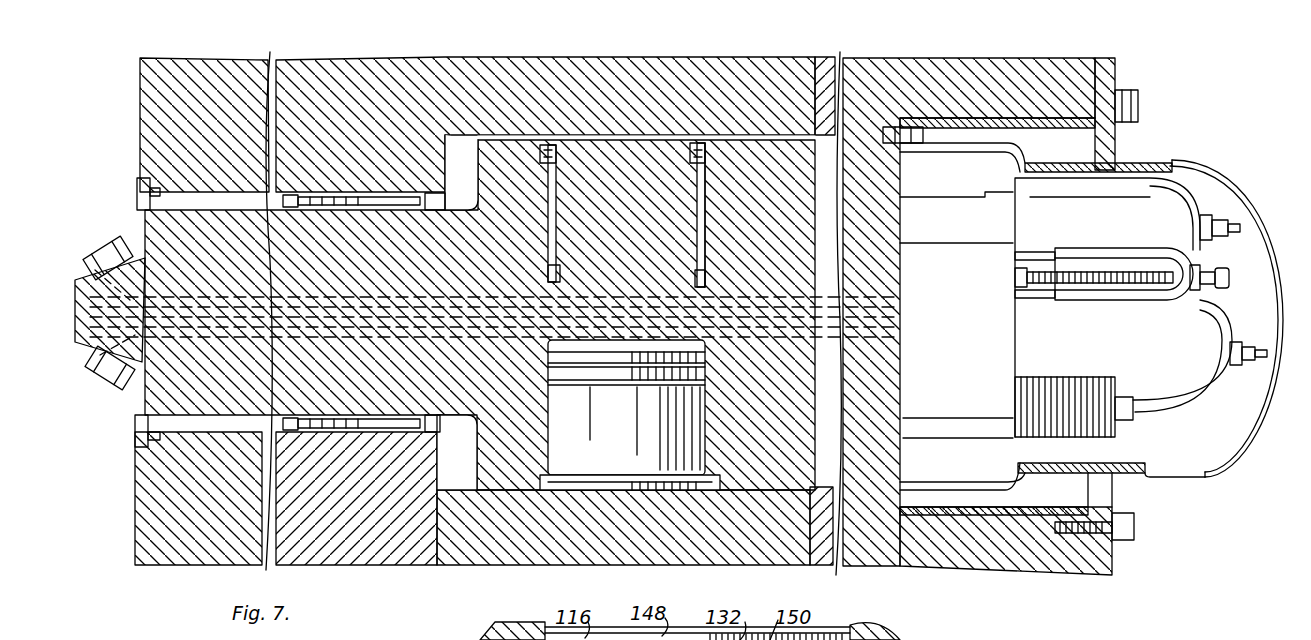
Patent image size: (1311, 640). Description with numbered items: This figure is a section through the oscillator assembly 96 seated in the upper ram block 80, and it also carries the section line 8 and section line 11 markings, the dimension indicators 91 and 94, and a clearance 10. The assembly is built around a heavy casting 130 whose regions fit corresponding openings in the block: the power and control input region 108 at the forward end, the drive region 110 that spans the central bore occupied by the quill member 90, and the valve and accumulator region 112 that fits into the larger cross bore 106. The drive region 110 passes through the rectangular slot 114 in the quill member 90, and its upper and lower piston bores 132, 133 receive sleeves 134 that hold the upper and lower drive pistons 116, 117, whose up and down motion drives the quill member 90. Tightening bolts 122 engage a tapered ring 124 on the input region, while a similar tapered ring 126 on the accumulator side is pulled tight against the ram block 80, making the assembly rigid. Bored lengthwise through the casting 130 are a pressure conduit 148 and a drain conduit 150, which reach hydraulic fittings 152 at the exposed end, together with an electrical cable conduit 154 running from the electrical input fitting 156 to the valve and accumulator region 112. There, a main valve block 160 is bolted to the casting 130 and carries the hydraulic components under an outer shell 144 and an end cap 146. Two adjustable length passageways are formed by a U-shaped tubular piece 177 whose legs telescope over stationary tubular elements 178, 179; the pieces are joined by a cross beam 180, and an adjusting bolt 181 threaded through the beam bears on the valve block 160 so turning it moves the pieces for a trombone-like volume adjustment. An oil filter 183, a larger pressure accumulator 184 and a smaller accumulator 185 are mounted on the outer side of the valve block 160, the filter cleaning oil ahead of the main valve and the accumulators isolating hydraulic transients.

The section line 8- 8 is at (97, 167).
The clearance gap 10 is at (902, 157).
The section line 11- 11 is at (1282, 133).
The upper ram block 80 is at (140, 90).
The quill member 90 is at (450, 57).
The dimension indicator 91 is at (690, 408).
The dimension indicator 94 is at (702, 247).
The oscillator assembly 96 is at (1225, 110).
The larger cross bore 106 is at (1078, 494).
The power and control input region 108 is at (348, 428).
The drive region 110 is at (787, 474).
The valve and accumulator region 112 is at (1017, 443).
The rectangular slot 114 is at (466, 150).
The upper drive piston 116 is at (708, 196).
The lower drive piston 117 is at (685, 441).
The tightening bolts 122 is at (278, 197).
The tapered ring 124 is at (400, 212).
The tapered ring 126 is at (893, 505).
The casting 130 is at (157, 393).
The upper piston bore 132 is at (552, 272).
The lower piston bore 133 is at (548, 356).
The sleeves 134 is at (712, 223).
The outer shell 144 is at (1124, 164).
The end cap 146 is at (1232, 172).
The pressure conduit 148 is at (346, 280).
The drain conduit 150 is at (810, 360).
The hydraulic fittings 152 is at (88, 262).
The electrical cable conduit 154 is at (382, 340).
The electrical input fitting 156 is at (92, 364).
The main valve block 160 is at (1003, 352).
The U-shaped tubular piece 177 is at (1148, 300).
The stationary tubular element 178 is at (1040, 303).
The stationary tubular element 179 is at (1037, 253).
The cross beam 180 is at (1200, 293).
The adjusting bolt 181 is at (1143, 270).
The oil filter 183 is at (1100, 437).
The larger pressure accumulator 184 is at (1180, 410).
The smaller accumulator 185 is at (1210, 175).